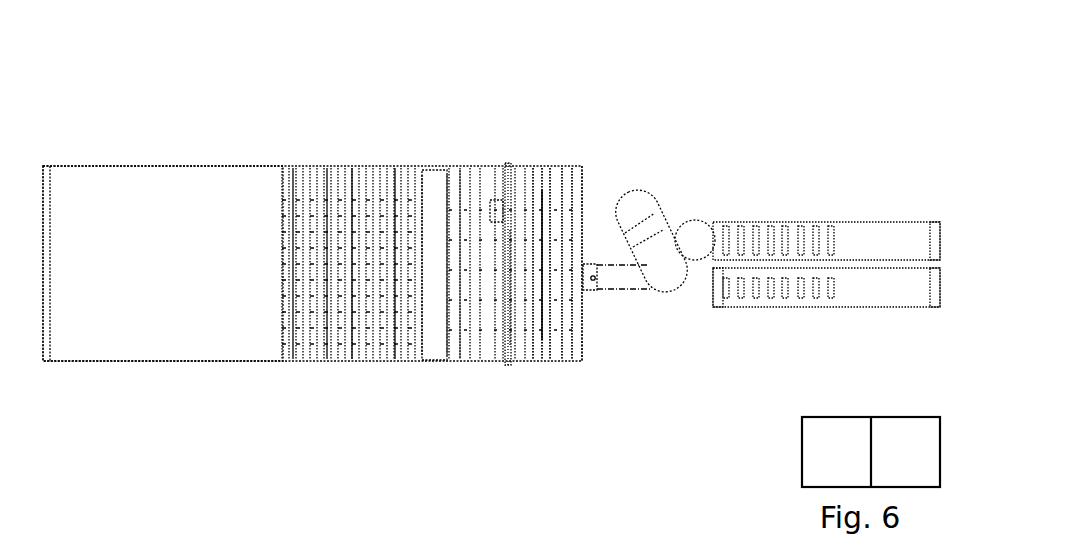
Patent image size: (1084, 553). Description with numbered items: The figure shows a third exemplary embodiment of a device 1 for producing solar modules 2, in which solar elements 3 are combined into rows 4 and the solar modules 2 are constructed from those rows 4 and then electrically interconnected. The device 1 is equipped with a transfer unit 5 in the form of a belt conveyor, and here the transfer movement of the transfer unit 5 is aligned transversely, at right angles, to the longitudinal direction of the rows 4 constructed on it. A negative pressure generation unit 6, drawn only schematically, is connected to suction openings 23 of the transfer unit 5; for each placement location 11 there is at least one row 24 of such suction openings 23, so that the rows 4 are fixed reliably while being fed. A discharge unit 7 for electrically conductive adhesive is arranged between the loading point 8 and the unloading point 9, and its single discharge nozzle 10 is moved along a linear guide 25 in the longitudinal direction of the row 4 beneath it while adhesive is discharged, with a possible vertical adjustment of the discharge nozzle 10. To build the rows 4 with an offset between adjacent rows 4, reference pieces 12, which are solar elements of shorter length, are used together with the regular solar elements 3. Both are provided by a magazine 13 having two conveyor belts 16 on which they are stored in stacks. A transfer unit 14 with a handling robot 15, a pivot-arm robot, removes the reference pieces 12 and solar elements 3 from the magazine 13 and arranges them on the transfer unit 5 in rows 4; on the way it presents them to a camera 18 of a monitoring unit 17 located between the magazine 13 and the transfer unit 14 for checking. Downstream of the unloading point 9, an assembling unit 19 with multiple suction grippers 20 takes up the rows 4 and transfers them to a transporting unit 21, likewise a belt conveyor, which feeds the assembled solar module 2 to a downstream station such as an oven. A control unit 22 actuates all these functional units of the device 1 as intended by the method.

The device 1 is at (371, 99).
The solar module 2 is at (306, 211).
The solar element 3 is at (816, 236).
The row 4 is at (544, 366).
The transfer unit 5 is at (578, 363).
The negative pressure generation unit 6 is at (871, 452).
The discharge unit 7 is at (494, 208).
The loading point 8 is at (556, 184).
The unloading point 9 is at (452, 199).
The discharge nozzle 10 is at (509, 197).
The placement location 11 is at (555, 209).
The reference piece 12 is at (463, 350).
The magazine 13 is at (766, 214).
The transfer unit 14 is at (633, 184).
The handling robot 15 is at (661, 229).
The conveyor belt 16 is at (876, 234).
The monitoring unit 17 is at (711, 320).
The camera 18 is at (695, 272).
The assembling unit 19 is at (419, 231).
The gripper 20 is at (432, 225).
The transporting unit 21 is at (101, 187).
The control unit 22 is at (897, 452).
The suction opening 23 is at (555, 209).
The row of suction openings 24 is at (538, 184).
The linear guide 25 is at (510, 289).